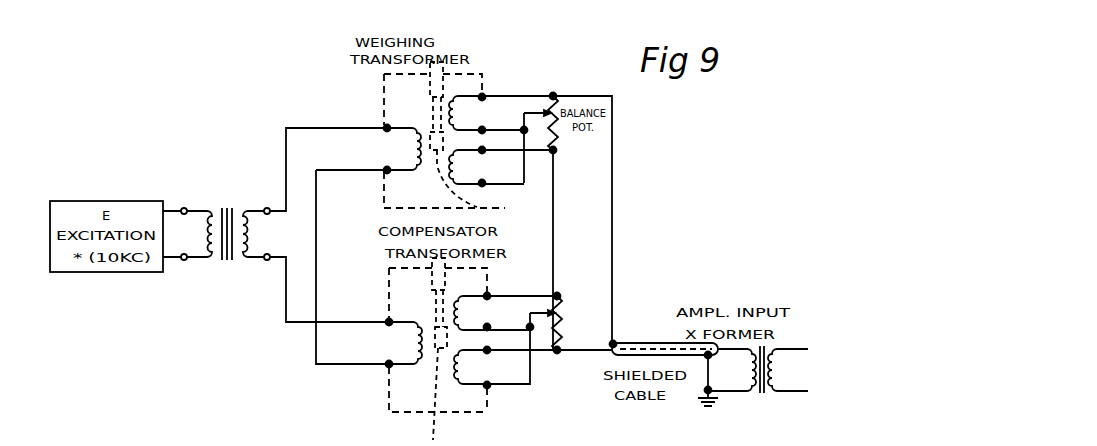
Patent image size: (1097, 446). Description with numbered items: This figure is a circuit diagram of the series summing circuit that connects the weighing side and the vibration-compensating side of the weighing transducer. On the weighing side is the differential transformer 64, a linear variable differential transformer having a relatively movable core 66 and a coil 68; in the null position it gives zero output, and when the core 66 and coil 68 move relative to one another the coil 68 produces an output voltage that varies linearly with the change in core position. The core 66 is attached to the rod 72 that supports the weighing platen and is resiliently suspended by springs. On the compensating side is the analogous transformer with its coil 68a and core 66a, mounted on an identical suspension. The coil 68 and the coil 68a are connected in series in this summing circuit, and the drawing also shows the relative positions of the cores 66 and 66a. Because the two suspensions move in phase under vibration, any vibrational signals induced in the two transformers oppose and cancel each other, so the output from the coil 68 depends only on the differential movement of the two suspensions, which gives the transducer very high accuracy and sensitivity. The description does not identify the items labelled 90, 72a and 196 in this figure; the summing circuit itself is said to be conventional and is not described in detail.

The differential transformer 64 is at (484, 72).
The rod 72 is at (456, 73).
The coil 68 is at (453, 170).
The core 66 is at (501, 156).
The compensator transformer 90 is at (487, 412).
The electrostatic shield of compensator transformer 72a is at (487, 268).
The coil 68a is at (423, 352).
The core 66a is at (487, 370).
The balance potentiometer circuit 196 is at (570, 370).